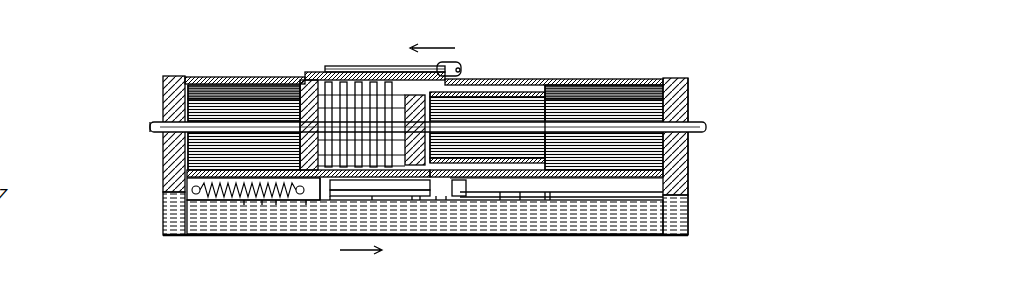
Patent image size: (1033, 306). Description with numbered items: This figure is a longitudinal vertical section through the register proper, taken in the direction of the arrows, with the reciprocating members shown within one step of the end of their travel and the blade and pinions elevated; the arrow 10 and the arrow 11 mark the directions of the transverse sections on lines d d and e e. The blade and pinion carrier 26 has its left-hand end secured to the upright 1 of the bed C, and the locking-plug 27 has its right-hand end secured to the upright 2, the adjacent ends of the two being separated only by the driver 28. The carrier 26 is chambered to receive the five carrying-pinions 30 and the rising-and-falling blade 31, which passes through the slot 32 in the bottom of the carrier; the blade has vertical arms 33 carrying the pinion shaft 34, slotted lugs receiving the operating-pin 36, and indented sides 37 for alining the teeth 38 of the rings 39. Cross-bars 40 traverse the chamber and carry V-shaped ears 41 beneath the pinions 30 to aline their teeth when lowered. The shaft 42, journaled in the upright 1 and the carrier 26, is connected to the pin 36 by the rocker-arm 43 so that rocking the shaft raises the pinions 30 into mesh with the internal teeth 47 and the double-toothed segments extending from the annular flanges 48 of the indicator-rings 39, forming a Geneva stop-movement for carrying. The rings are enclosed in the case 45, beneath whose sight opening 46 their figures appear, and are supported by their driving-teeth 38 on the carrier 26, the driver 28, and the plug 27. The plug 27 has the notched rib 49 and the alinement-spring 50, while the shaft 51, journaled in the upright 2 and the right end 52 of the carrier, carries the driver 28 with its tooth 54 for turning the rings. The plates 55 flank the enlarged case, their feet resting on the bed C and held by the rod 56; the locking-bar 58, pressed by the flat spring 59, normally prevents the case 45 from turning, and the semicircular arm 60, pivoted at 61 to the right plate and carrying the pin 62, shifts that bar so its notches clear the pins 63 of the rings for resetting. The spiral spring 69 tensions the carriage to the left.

The upright 1 is at (165, 84).
The upright 2 is at (688, 110).
The arrow 10 is at (434, 41).
The arrow 11 is at (360, 260).
The blade and pinion carrier 26 is at (240, 77).
The locking-plug 27 is at (545, 198).
The driver 28 is at (556, 206).
The carrying-pinions 30 is at (308, 86).
The pinion-carrying blade 31 is at (244, 205).
The slot 32 is at (276, 205).
The vertical arms 33 is at (322, 82).
The shaft 34 is at (487, 127).
The operating-pin 36 is at (268, 84).
The indentations 37 is at (425, 217).
The internal driving-teeth 38 is at (390, 78).
The indicator-ring 39 is at (390, 212).
The cross-bars 40 is at (306, 205).
The V-shaped ears 41 is at (270, 205).
The shaft 42 is at (168, 120).
The rocker-arm 43 is at (253, 206).
The case 45 is at (205, 80).
The sight opening 46 is at (458, 68).
The teeth 47 is at (330, 70).
The annular flange 48 is at (352, 70).
The notched rib 49 is at (524, 80).
The alinement-spring 50 is at (550, 198).
The shaft 51 is at (612, 84).
The right end 52 is at (412, 72).
The tooth 54 is at (442, 68).
The plates 55 is at (285, 84).
The rod 56 is at (665, 200).
The locking-bar 58 is at (380, 207).
The flat spring 59 is at (313, 206).
The semicircular arm 60 is at (500, 198).
The pivot 61 is at (495, 82).
The pin 62 is at (520, 198).
The pins 63 is at (452, 198).
The spiral spring 69 is at (212, 222).
The bed C is at (688, 230).
The contact bar a is at (408, 80).
The section lines d d is at (412, 200).
The section lines e e is at (386, 80).